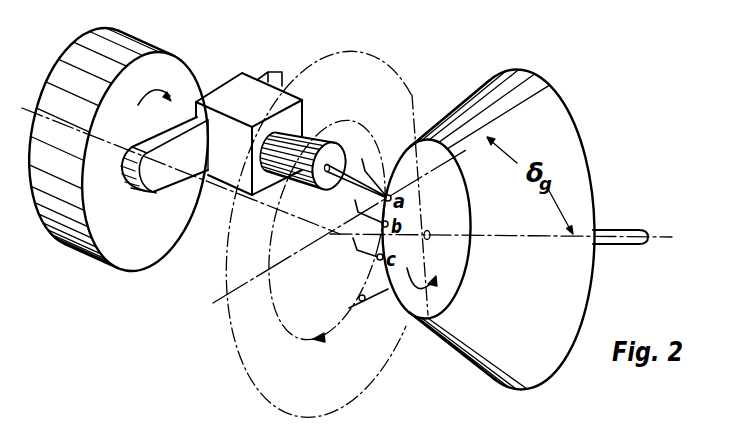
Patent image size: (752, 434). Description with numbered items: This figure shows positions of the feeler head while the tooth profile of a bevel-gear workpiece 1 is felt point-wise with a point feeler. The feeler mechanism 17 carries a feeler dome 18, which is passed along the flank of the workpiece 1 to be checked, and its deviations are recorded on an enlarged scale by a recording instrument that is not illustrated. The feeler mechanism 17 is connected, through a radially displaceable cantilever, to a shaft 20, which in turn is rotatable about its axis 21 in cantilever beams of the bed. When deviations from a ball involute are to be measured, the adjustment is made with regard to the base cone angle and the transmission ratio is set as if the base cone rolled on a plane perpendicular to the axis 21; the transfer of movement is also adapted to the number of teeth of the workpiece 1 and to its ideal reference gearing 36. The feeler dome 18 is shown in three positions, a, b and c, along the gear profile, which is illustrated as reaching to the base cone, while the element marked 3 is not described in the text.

The workpiece 1 is at (570, 137).
The shaft 3 is at (655, 237).
The feeler mechanism 17 is at (242, 82).
The feeler dome 18 is at (388, 196).
The shaft 20 is at (118, 255).
The axis 21 is at (55, 121).
The ideal reference gearing 36 is at (268, 383).